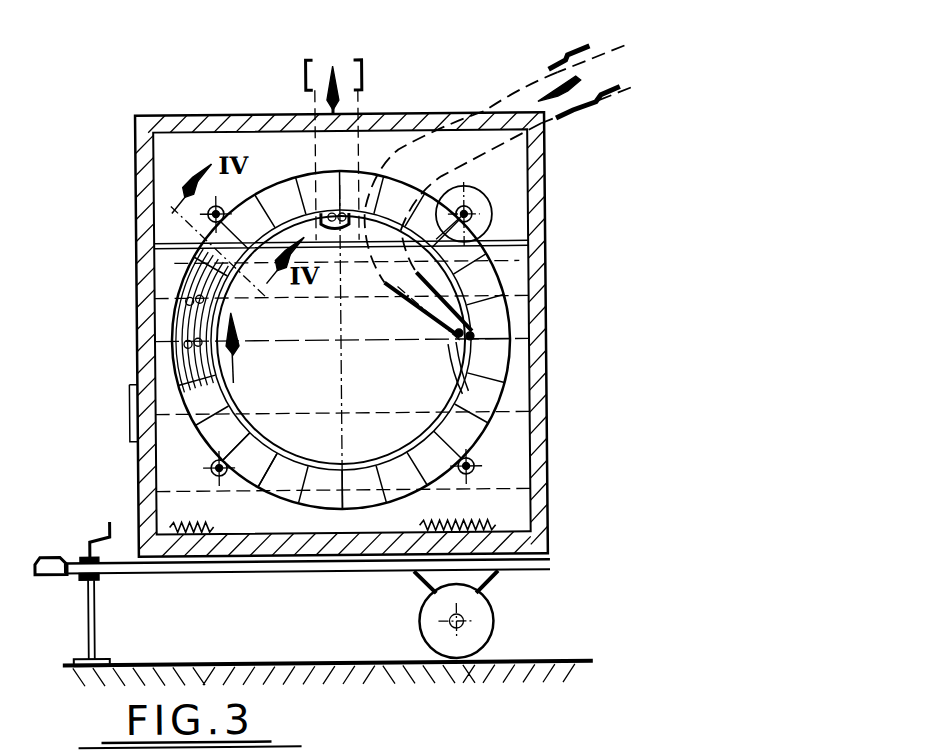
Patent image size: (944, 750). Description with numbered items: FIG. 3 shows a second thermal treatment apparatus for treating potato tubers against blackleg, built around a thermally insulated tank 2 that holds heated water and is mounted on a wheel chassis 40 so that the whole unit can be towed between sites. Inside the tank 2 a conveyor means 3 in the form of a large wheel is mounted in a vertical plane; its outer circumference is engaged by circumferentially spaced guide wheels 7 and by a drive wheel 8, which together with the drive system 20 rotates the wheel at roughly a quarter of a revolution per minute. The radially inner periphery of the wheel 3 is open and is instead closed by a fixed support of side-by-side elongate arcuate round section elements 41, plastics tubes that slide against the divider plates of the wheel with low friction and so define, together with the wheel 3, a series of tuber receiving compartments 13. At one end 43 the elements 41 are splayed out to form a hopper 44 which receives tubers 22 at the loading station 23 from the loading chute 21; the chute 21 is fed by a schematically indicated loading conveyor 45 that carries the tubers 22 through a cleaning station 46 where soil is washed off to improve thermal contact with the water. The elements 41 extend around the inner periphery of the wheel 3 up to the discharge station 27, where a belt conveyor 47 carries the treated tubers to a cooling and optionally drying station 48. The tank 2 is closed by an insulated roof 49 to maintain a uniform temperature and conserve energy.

The thermally insulated tank 2 is at (547, 492).
The conveyor means 3 is at (483, 280).
The guide wheels 7 is at (210, 468).
The drive wheel 8 is at (465, 215).
The tuber receiving compartments 13 is at (282, 487).
The drive system 20 is at (473, 214).
The loading chute 21 is at (478, 304).
The tubers 22 is at (205, 342).
The loading station 23 is at (470, 345).
The discharge station 27 is at (333, 222).
The wheel chassis 40 is at (280, 562).
The elongate arcuate round section elements 41 is at (352, 492).
The splayed end 43 is at (476, 336).
The hopper 44 is at (448, 360).
The loading conveyor 45 is at (527, 86).
The cleaning station 46 is at (563, 62).
The belt conveyor 47 is at (362, 102).
The cooling station 48 is at (365, 68).
The insulated roof 49 is at (425, 123).